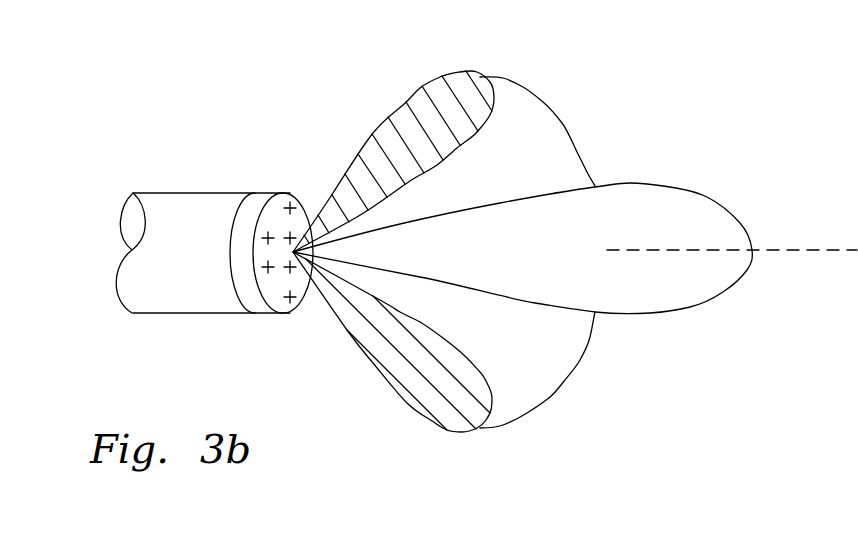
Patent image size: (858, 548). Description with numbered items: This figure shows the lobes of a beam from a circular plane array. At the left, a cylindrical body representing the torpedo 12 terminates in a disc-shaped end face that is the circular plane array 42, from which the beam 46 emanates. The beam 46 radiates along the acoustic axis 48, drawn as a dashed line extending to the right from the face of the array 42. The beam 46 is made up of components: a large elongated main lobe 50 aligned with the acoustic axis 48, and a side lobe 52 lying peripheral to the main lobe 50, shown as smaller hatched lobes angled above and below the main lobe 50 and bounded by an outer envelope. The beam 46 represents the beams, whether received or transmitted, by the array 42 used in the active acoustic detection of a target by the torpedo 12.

The torpedo 12 is at (178, 193).
The circular plane array 42 is at (292, 193).
The beam 46 is at (463, 43).
The acoustic axis 48 is at (835, 250).
The main lobe 50 is at (643, 313).
The side lobe 52 is at (565, 378).